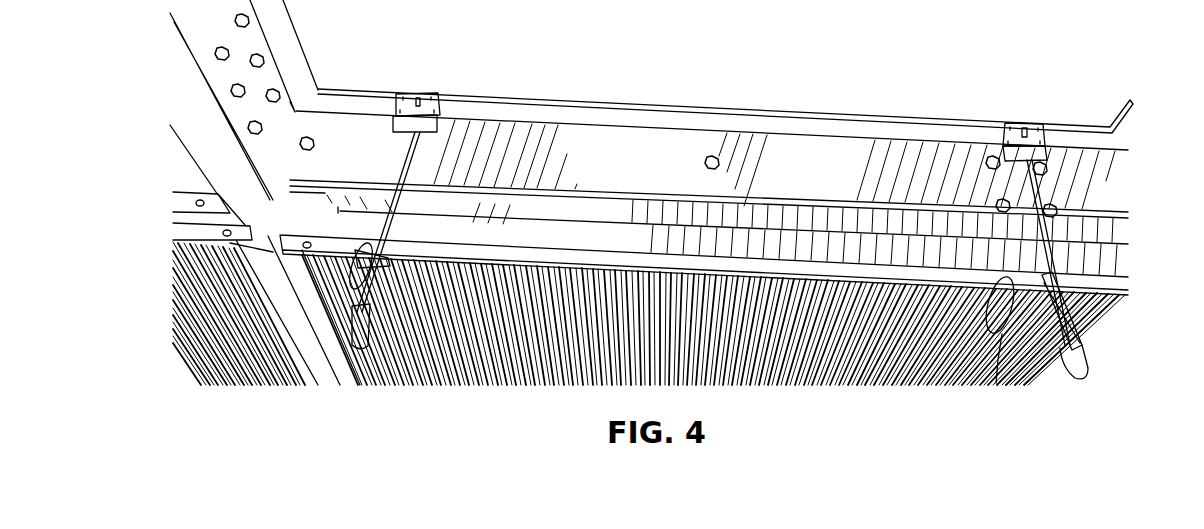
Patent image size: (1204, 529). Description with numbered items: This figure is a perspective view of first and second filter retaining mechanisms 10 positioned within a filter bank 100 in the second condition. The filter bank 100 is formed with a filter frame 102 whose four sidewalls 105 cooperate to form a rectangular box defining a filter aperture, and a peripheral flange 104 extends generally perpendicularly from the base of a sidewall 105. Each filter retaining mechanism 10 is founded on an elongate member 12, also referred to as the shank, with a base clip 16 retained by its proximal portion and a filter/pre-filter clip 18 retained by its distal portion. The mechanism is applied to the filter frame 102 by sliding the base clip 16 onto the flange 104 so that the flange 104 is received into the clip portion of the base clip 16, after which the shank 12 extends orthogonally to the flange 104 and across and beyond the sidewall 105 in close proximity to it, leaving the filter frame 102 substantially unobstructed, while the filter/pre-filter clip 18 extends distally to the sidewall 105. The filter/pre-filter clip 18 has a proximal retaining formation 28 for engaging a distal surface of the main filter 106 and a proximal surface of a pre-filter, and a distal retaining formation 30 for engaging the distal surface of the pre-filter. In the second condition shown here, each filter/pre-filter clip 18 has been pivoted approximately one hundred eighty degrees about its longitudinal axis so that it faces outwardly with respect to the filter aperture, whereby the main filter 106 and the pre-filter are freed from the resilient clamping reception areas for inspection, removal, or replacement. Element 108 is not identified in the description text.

The filter retaining mechanism 10 is at (1112, 257).
The elongate member 12 is at (1068, 240).
The base clip 16 is at (1052, 138).
The filter/pre-filter clip 18 is at (1080, 330).
The proximal retaining formation 28 is at (1002, 352).
The distal retaining formation 30 is at (1066, 357).
The filter bank 100 is at (1137, 108).
The filter frame 102 is at (1083, 186).
The flange 104 is at (1050, 126).
The sidewall 105 is at (707, 159).
The main filter 106 is at (1110, 282).
The loop 108 is at (990, 275).